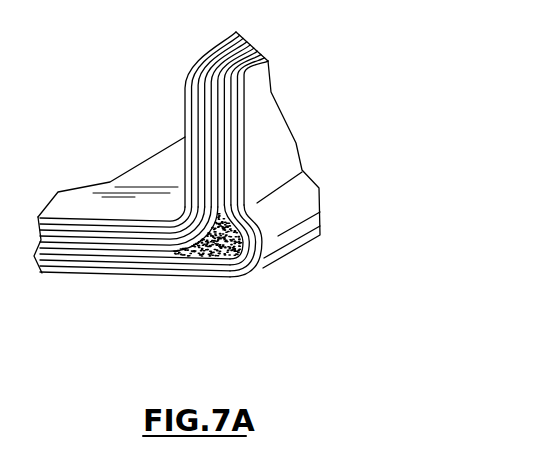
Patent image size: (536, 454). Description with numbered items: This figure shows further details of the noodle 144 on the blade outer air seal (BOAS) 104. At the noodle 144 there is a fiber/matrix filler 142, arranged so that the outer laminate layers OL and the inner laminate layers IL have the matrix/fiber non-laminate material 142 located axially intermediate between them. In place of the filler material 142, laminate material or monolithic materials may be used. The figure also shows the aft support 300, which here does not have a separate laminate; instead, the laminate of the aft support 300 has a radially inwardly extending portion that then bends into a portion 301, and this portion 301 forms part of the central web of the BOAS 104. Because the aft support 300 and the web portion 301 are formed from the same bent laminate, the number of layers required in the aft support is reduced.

The blade outer air seal 104 is at (259, 200).
The aft support 300 is at (197, 120).
The portion 301 is at (98, 244).
The fiber/matrix filler 142 is at (222, 263).
The noodle 144 is at (262, 268).
The inner laminate layers IL is at (200, 247).
The outer laminate layers OL is at (265, 246).